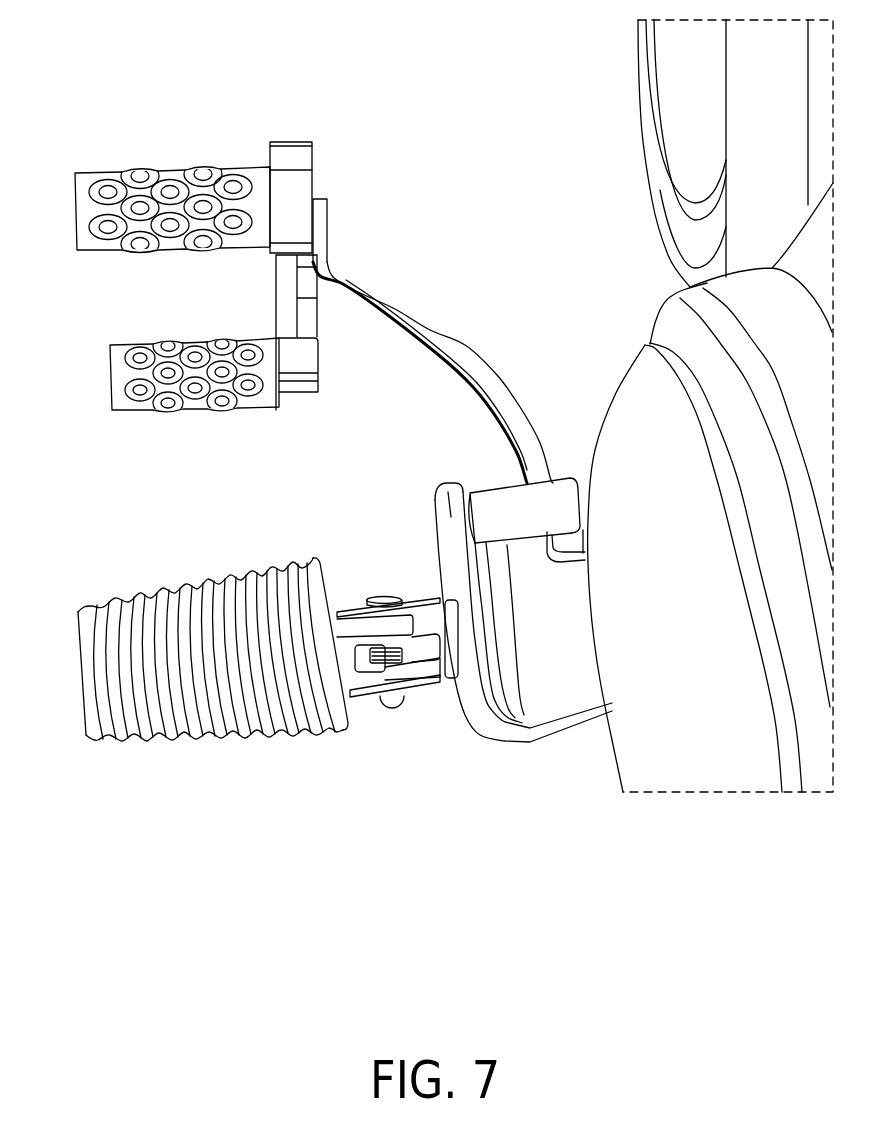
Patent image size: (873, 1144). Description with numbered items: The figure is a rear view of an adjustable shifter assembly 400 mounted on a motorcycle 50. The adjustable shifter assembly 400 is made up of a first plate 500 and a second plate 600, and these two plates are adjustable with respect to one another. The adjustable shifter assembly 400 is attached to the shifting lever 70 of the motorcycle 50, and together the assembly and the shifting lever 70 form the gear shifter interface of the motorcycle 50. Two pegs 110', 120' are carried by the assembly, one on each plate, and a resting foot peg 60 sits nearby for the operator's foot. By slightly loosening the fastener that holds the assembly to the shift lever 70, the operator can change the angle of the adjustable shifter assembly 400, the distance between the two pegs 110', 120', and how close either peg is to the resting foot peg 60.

The motorcycle 50 is at (595, 373).
The resting foot peg 60 is at (88, 650).
The shifting lever 70 is at (388, 310).
The peg 110' is at (166, 399).
The peg 120' is at (161, 180).
The adjustable shifter assembly 400 is at (252, 292).
The first plate 500 is at (305, 356).
The second plate 600 is at (300, 183).